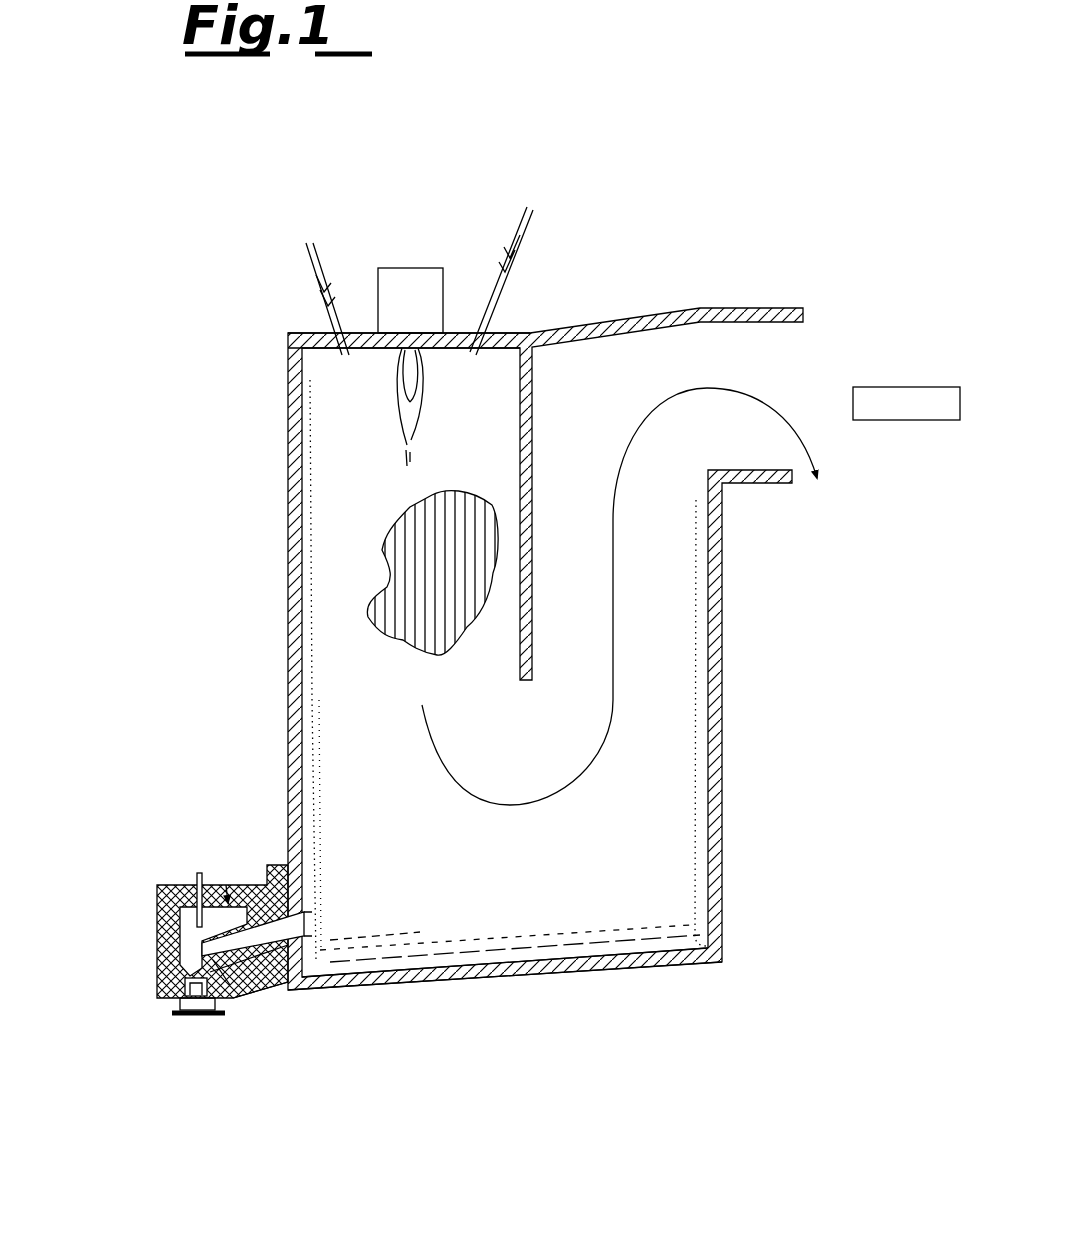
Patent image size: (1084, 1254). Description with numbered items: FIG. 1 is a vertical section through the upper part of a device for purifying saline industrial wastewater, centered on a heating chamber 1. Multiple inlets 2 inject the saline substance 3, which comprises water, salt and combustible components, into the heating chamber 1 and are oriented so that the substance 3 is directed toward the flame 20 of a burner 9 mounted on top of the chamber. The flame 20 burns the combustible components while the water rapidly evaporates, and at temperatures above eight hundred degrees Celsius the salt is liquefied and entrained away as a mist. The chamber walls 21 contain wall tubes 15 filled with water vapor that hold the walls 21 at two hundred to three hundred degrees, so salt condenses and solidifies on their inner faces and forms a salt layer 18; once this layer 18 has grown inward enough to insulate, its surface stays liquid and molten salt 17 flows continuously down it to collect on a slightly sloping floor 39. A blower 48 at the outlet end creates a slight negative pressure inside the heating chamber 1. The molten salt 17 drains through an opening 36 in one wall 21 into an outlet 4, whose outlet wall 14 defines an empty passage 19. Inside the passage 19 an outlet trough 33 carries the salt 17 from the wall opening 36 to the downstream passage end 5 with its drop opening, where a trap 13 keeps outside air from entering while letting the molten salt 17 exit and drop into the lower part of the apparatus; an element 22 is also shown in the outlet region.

The heating chamber 1 is at (380, 519).
The inlets 2 is at (322, 300).
The saline substance 3 is at (310, 244).
The outlet 4 is at (218, 856).
The passage end 5 is at (193, 1022).
The burner 9 is at (408, 283).
The trap 13 is at (178, 985).
The outlet wall 14 is at (272, 975).
The wall tubes 15 is at (415, 628).
The molten salt 17 is at (468, 942).
The salt layer 18 is at (306, 700).
The passage 19 is at (232, 880).
The flame 20 is at (405, 420).
The walls 21 is at (290, 358).
The electrode 22 is at (200, 872).
The outlet trough 33 is at (247, 990).
The opening 36 is at (310, 928).
The floor 39 is at (537, 968).
The blower 48 is at (913, 387).